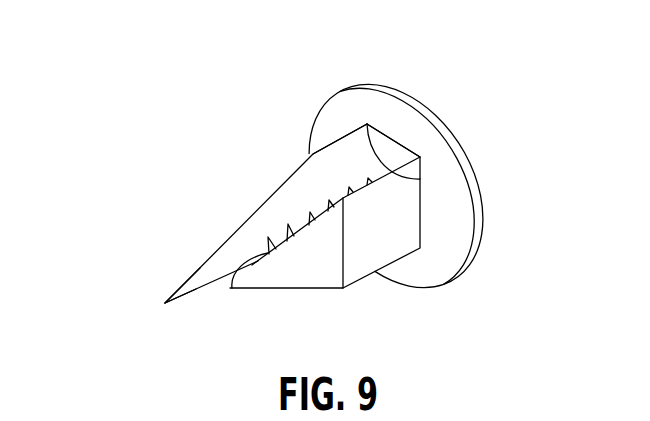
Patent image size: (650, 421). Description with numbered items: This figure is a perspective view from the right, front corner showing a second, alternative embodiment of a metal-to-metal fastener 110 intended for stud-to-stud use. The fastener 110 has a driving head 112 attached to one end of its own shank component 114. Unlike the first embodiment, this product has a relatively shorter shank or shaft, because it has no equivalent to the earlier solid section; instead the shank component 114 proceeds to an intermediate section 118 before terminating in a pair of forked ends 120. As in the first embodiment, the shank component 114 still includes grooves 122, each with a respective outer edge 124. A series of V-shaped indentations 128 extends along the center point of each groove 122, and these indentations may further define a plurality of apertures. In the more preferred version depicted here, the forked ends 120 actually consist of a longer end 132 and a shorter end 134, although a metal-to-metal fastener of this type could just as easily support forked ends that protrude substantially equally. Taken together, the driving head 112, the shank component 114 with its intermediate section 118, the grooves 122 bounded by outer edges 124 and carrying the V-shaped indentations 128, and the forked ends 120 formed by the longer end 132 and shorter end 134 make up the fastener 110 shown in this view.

The fastener 110 is at (283, 112).
The driving head 112 is at (481, 190).
The shank component 114 is at (397, 316).
The intermediate section 118 is at (398, 245).
The forked ends 120 is at (137, 270).
The grooves 122 is at (336, 170).
The outer edges 124 is at (307, 168).
The V-shaped indentations 128 is at (276, 233).
The longer end 132 is at (207, 288).
The shorter end 134 is at (290, 267).